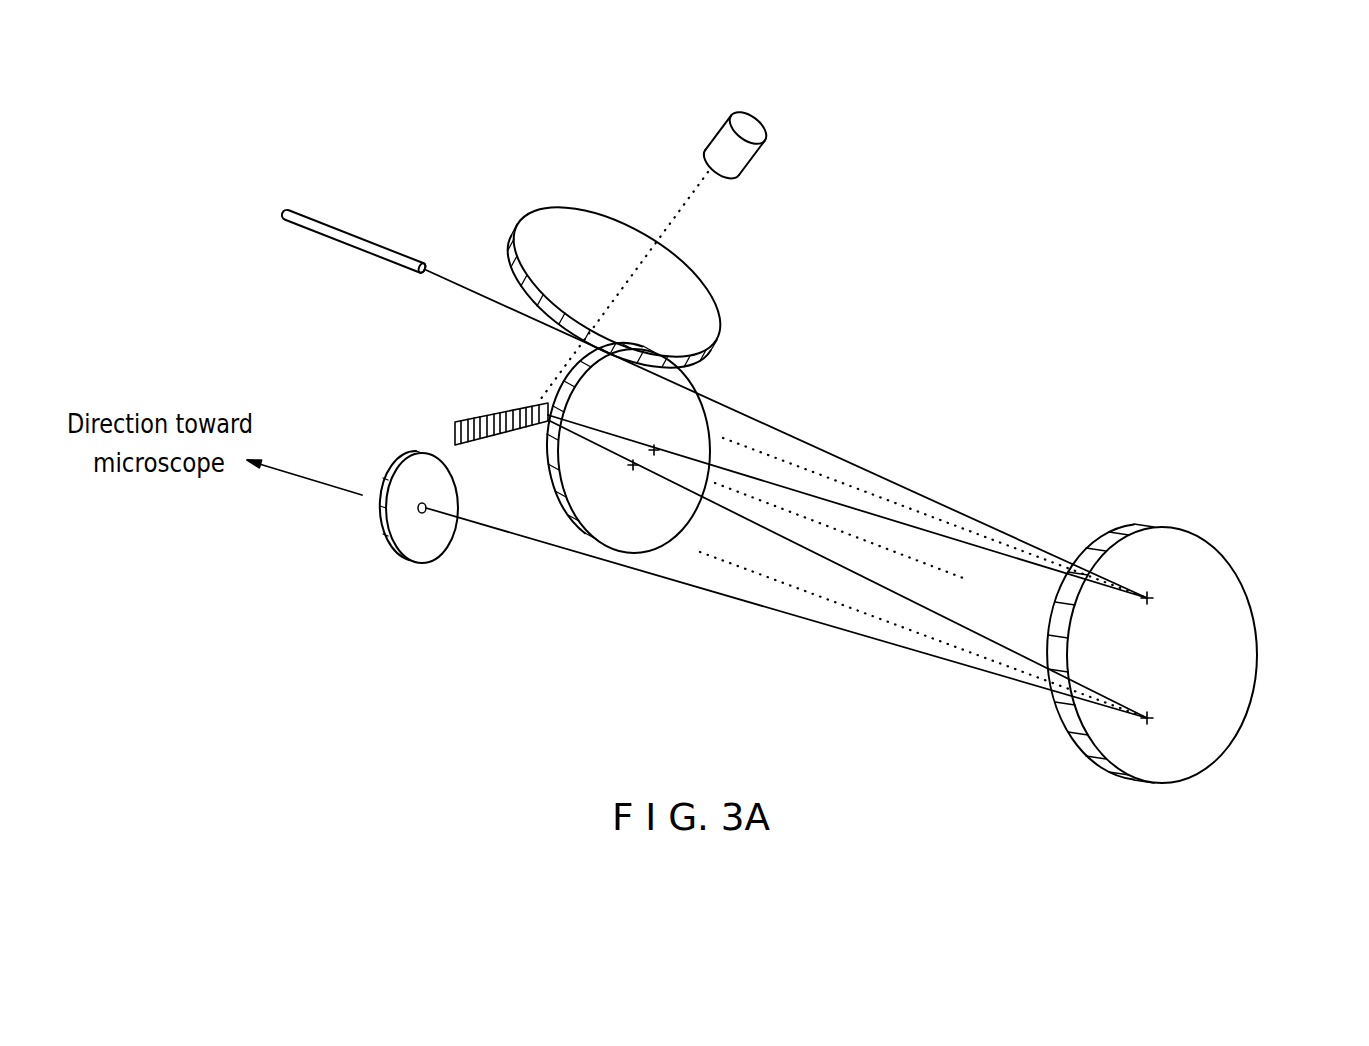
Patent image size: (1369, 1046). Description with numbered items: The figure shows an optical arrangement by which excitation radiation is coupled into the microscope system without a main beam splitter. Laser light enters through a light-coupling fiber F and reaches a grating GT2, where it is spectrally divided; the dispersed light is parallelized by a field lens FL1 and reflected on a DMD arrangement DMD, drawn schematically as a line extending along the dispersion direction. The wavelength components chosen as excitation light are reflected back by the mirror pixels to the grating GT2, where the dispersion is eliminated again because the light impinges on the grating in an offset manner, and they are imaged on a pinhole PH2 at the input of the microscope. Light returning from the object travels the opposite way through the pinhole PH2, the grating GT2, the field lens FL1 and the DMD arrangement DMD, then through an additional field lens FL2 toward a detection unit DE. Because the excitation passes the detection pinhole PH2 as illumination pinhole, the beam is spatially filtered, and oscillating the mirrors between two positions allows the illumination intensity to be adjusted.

The detection unit DE is at (712, 130).
The light-coupling fiber F is at (365, 238).
The additional field lens FL2 is at (720, 310).
The field lens FL1 is at (558, 503).
The DMD arrangement DMD is at (495, 409).
The pinhole PH2 is at (408, 562).
The grating GT2 is at (1255, 680).